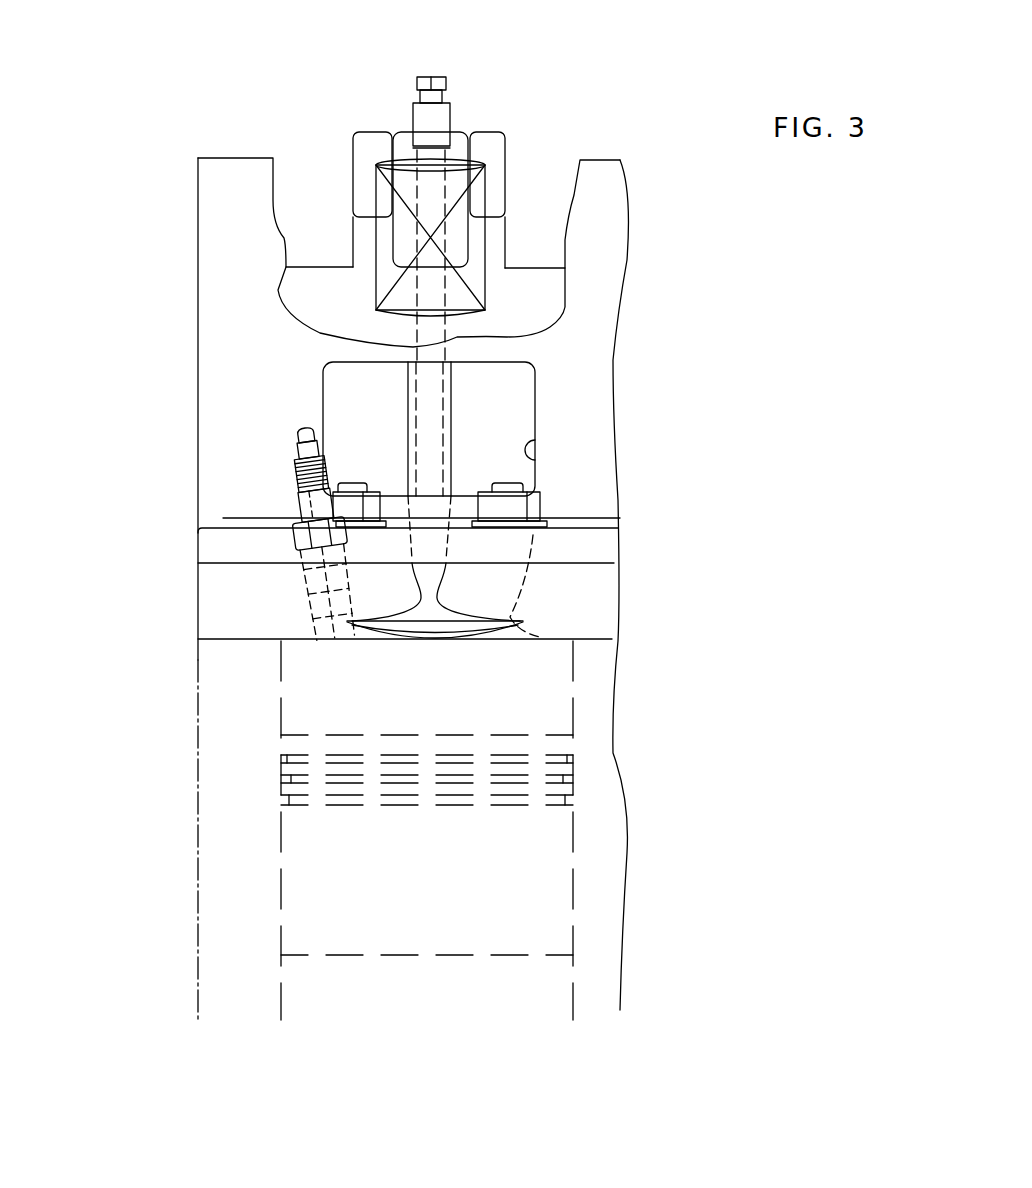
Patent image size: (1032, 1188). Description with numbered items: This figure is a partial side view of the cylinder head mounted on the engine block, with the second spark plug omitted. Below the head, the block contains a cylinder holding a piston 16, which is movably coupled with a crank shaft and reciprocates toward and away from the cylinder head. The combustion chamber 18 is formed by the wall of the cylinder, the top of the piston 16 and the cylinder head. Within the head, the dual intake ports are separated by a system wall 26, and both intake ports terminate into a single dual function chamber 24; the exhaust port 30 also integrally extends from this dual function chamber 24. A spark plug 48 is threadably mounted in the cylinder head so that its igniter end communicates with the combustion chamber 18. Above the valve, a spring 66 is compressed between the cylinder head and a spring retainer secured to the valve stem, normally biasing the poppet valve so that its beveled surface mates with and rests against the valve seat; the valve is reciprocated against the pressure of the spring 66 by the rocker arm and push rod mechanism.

The piston 16 is at (485, 904).
The combustion chamber 18 is at (502, 685).
The dual function chamber 24 is at (478, 592).
The system wall 26 is at (455, 418).
The exhaust port 30 is at (523, 457).
The spark plug 48 is at (297, 453).
The spring 66 is at (487, 200).